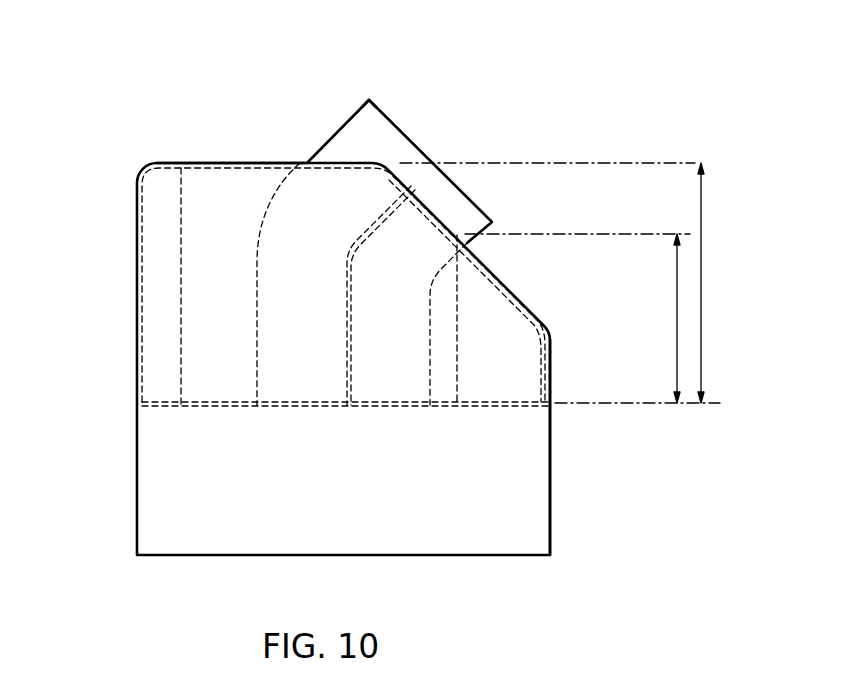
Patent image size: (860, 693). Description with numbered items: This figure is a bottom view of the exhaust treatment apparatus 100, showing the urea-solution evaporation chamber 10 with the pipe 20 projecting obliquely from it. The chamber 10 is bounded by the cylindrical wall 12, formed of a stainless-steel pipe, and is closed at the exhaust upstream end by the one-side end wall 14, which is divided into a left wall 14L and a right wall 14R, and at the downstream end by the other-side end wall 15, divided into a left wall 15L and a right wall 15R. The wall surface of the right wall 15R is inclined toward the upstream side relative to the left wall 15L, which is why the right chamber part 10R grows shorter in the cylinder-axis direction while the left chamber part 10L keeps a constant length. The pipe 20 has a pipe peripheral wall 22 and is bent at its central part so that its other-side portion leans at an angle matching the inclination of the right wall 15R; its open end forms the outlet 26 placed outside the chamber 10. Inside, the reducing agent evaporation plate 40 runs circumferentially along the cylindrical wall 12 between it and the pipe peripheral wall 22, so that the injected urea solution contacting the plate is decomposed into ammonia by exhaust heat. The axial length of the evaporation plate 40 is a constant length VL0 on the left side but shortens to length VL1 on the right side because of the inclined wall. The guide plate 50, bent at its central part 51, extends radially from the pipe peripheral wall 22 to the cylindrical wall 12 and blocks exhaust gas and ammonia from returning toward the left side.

The exhaust treatment apparatus 100 is at (500, 152).
The urea-solution evaporation chamber 10 is at (120, 286).
The left chamber part 10L is at (208, 333).
The right chamber part 10R is at (452, 342).
The cylindrical wall 12 is at (137, 306).
The one-side end wall 14 is at (290, 383).
The left wall 14L is at (167, 402).
The right wall 14R is at (495, 402).
The other-side end wall 15 is at (211, 130).
The left wall 15L is at (228, 163).
The right wall 15R is at (450, 213).
The pipe 20 is at (399, 146).
The pipe peripheral wall 22 is at (393, 142).
The outlet 26 is at (373, 98).
The reducing agent evaporation plate 40 is at (181, 260).
The guide plate 50 is at (352, 305).
The central part 51 is at (345, 256).
The length VL0 is at (703, 318).
The length VL1 is at (676, 368).